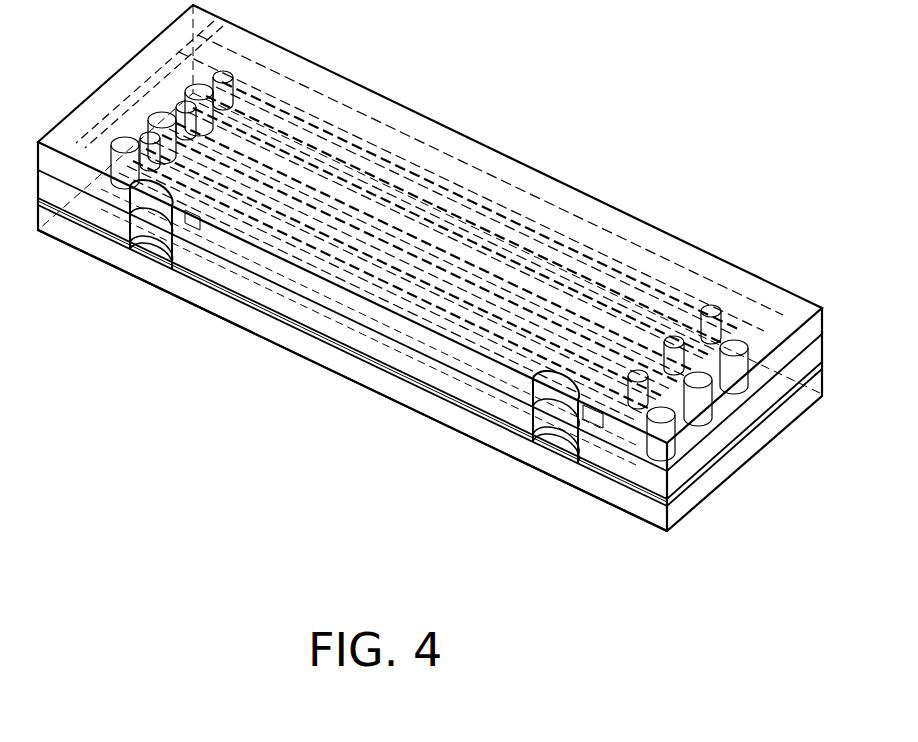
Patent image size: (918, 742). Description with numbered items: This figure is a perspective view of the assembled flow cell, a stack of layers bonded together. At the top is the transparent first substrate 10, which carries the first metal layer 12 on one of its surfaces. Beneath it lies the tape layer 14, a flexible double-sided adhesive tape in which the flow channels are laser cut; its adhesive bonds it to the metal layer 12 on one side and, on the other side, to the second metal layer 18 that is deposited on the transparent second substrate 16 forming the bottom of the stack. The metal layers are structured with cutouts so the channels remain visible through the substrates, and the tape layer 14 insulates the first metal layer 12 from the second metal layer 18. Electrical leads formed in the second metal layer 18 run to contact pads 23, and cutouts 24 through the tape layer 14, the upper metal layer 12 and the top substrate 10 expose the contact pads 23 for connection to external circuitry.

The first substrate 10 is at (85, 172).
The metal layer 12 is at (110, 155).
The tape layer 14 is at (230, 290).
The second substrate 16 is at (275, 330).
The second metal layer 18 is at (328, 345).
The contact pads 23 is at (600, 416).
The cutouts 24 is at (513, 392).